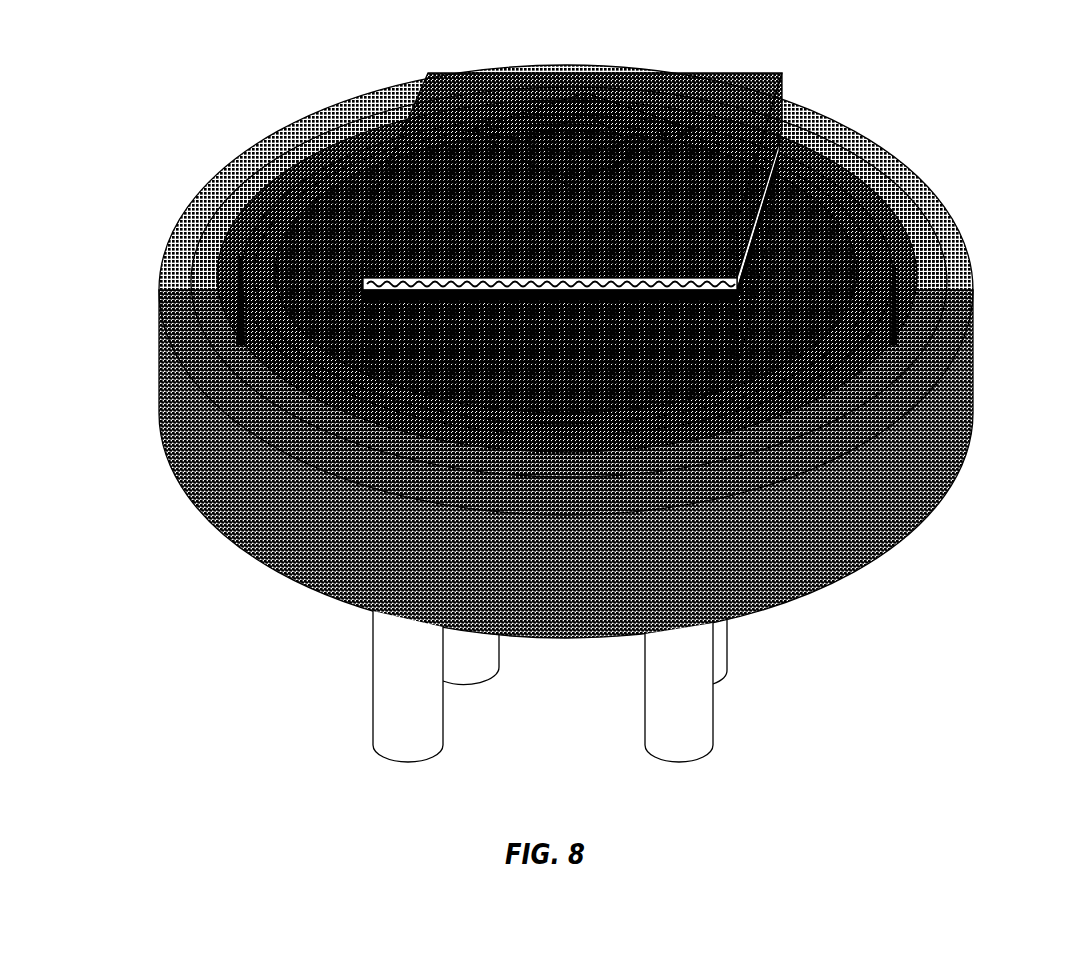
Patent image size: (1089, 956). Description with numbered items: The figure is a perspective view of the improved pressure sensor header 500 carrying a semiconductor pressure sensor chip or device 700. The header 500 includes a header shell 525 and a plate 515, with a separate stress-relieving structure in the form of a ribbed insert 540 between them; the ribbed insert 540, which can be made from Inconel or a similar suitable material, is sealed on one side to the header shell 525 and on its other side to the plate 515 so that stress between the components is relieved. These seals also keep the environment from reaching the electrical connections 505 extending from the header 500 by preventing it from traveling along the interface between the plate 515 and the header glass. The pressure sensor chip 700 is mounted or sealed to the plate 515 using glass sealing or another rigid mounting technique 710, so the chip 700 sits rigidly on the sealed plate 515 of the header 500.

The header 500 is at (586, 397).
The electrical connections 505 is at (696, 659).
The plate 515 is at (331, 245).
The header shell 525 is at (334, 553).
The ribbed insert 540 is at (237, 247).
The semiconductor pressure sensor chip 700 is at (665, 200).
The glass sealing 710 is at (766, 284).